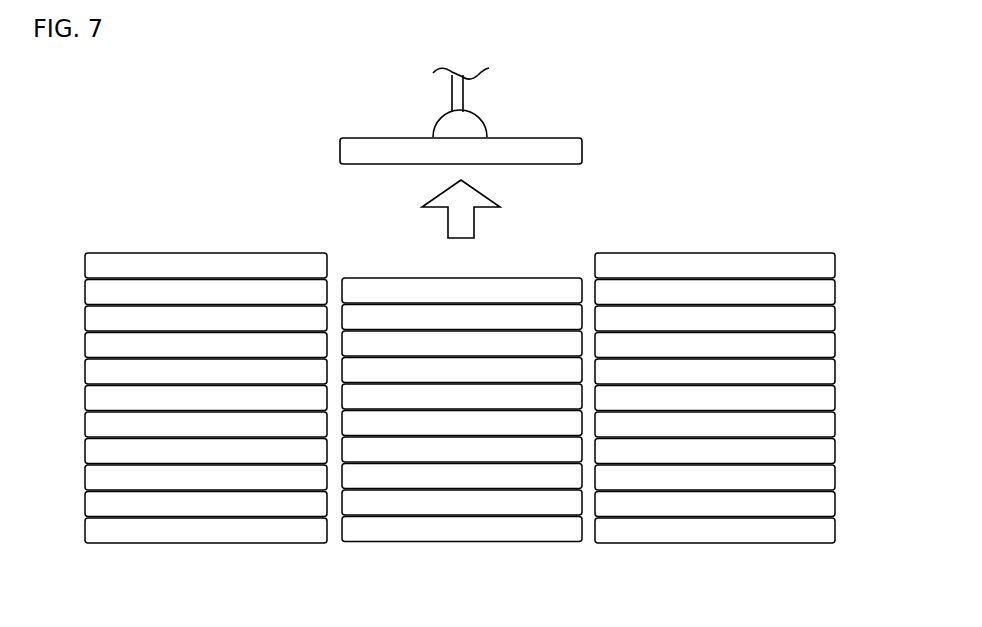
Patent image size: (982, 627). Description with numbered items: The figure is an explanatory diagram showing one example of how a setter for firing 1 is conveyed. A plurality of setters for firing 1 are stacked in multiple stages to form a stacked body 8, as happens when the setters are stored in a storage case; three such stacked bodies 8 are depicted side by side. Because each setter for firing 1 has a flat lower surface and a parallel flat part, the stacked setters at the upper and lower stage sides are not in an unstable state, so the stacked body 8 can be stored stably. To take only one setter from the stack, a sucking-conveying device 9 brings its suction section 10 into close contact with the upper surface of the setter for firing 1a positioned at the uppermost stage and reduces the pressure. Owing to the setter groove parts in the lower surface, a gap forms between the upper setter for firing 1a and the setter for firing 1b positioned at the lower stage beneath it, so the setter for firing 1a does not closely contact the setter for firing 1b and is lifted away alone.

The setter for firing 1 is at (222, 527).
The setter for firing at an upper stage position 1a is at (563, 152).
The setter for firing at a lower stage position 1b is at (532, 288).
The stacked body 8 is at (152, 232).
The sucking-conveying device 9 is at (360, 99).
The suction section 10 is at (467, 122).